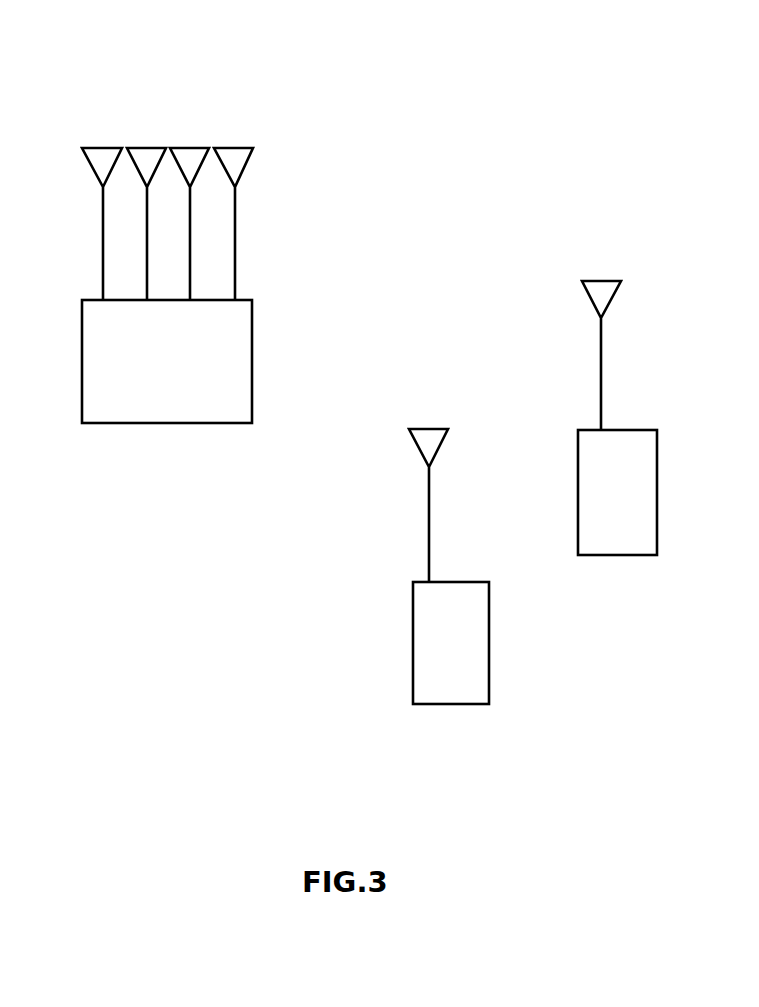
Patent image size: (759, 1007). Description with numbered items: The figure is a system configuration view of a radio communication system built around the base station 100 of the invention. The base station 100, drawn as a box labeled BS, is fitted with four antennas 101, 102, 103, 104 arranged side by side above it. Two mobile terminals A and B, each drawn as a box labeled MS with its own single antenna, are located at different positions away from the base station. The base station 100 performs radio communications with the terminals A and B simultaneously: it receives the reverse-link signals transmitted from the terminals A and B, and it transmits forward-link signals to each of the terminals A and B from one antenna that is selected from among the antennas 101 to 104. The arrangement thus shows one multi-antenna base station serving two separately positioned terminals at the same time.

The base station 100 is at (253, 327).
The antenna 101 is at (95, 147).
The antenna 102 is at (140, 147).
The antenna 103 is at (183, 147).
The antenna 104 is at (230, 147).
The terminal A is at (490, 615).
The terminal B is at (657, 455).